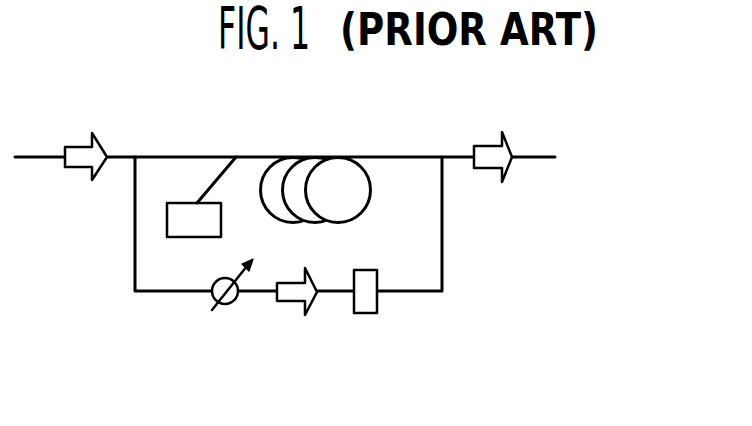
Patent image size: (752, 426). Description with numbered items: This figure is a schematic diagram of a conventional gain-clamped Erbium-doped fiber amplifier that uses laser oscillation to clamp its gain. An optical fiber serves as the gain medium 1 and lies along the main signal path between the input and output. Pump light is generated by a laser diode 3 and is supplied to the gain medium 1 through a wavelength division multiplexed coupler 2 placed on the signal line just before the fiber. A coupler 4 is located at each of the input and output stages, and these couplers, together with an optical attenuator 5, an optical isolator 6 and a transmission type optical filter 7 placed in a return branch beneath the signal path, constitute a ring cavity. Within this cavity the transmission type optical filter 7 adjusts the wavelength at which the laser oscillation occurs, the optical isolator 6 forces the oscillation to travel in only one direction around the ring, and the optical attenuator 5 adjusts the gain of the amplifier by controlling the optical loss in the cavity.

The gain medium 1 is at (360, 158).
The wavelength division multiplexed coupler 2 is at (233, 157).
The laser diode 3 is at (167, 220).
The coupler 4 is at (133, 157).
The optical attenuator 5 is at (227, 305).
The optical isolator 6 is at (293, 303).
The transmission type optical filter 7 is at (367, 315).